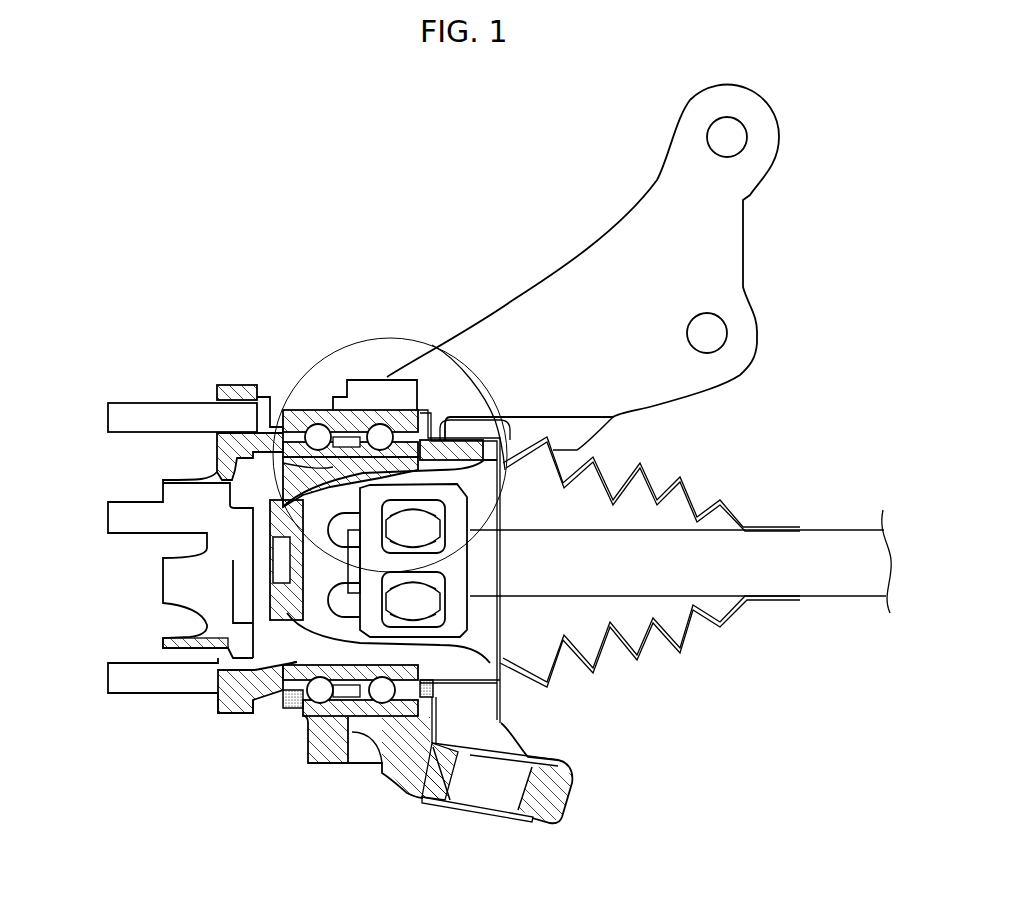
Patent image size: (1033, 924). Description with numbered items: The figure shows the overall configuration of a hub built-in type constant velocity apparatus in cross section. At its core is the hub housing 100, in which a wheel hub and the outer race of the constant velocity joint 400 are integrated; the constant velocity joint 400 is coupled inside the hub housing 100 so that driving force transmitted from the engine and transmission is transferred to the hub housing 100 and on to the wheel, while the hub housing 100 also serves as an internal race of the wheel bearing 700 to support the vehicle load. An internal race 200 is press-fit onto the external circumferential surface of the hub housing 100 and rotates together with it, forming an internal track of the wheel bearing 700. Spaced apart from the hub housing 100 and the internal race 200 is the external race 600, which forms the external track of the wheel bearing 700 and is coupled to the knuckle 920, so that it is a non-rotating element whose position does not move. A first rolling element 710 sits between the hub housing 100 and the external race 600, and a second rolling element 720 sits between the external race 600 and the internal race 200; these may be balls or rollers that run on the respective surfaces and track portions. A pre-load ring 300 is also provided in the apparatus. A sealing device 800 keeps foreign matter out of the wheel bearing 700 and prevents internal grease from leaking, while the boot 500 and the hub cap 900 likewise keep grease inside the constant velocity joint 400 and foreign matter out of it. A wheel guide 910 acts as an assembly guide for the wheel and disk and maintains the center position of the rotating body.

The hub housing 100 is at (240, 408).
The internal race 200 is at (408, 407).
The pre-load ring 300 is at (437, 663).
The constant velocity joint 400 is at (420, 600).
The boot 500 is at (687, 487).
The external race 600 is at (315, 743).
The wheel bearing 700 is at (410, 705).
The first rolling element 710 is at (327, 705).
The second rolling element 720 is at (422, 707).
The sealing device 800 is at (272, 708).
The hub cap 900 is at (280, 567).
The wheel guide 910 is at (170, 568).
The knuckle 920 is at (603, 270).